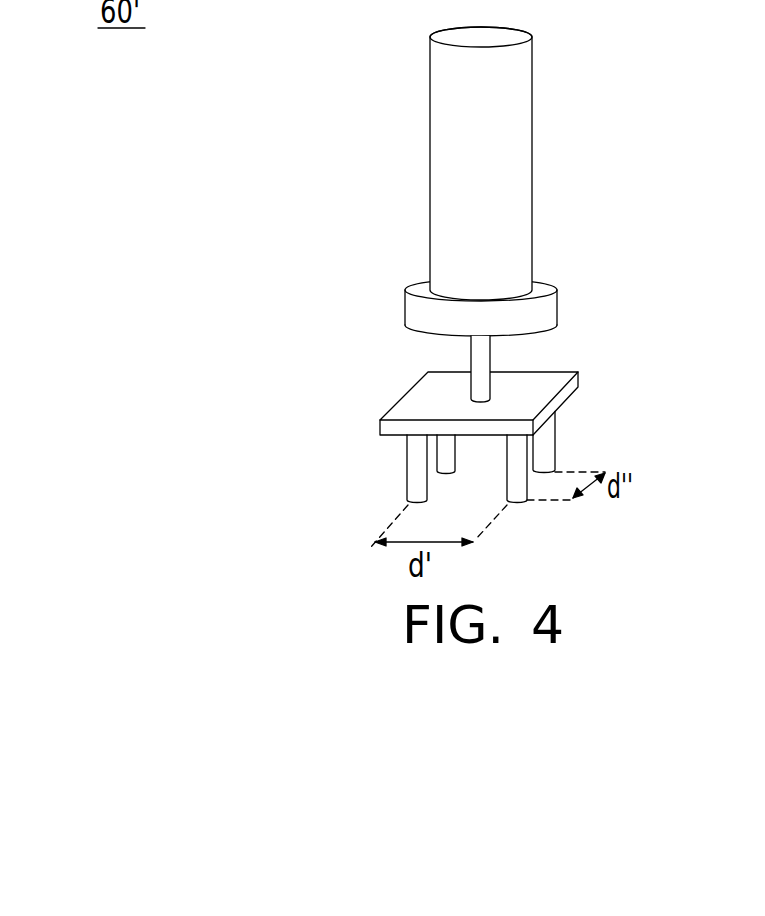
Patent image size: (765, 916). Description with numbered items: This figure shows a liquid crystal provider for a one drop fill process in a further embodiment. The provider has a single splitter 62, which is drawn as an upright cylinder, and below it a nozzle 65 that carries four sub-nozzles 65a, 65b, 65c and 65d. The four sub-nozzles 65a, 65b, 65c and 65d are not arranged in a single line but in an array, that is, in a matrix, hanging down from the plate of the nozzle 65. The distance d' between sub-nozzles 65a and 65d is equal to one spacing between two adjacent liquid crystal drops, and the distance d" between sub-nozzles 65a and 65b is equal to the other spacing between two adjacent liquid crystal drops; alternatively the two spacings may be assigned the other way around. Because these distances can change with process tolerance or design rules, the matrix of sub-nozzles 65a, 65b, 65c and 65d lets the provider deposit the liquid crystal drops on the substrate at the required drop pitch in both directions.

The splitter 62 is at (520, 67).
The nozzle 65 is at (487, 360).
The sub-nozzle 65a is at (447, 450).
The sub-nozzle 65b is at (413, 478).
The sub-nozzle 65c is at (518, 492).
The sub-nozzle 65d is at (550, 445).